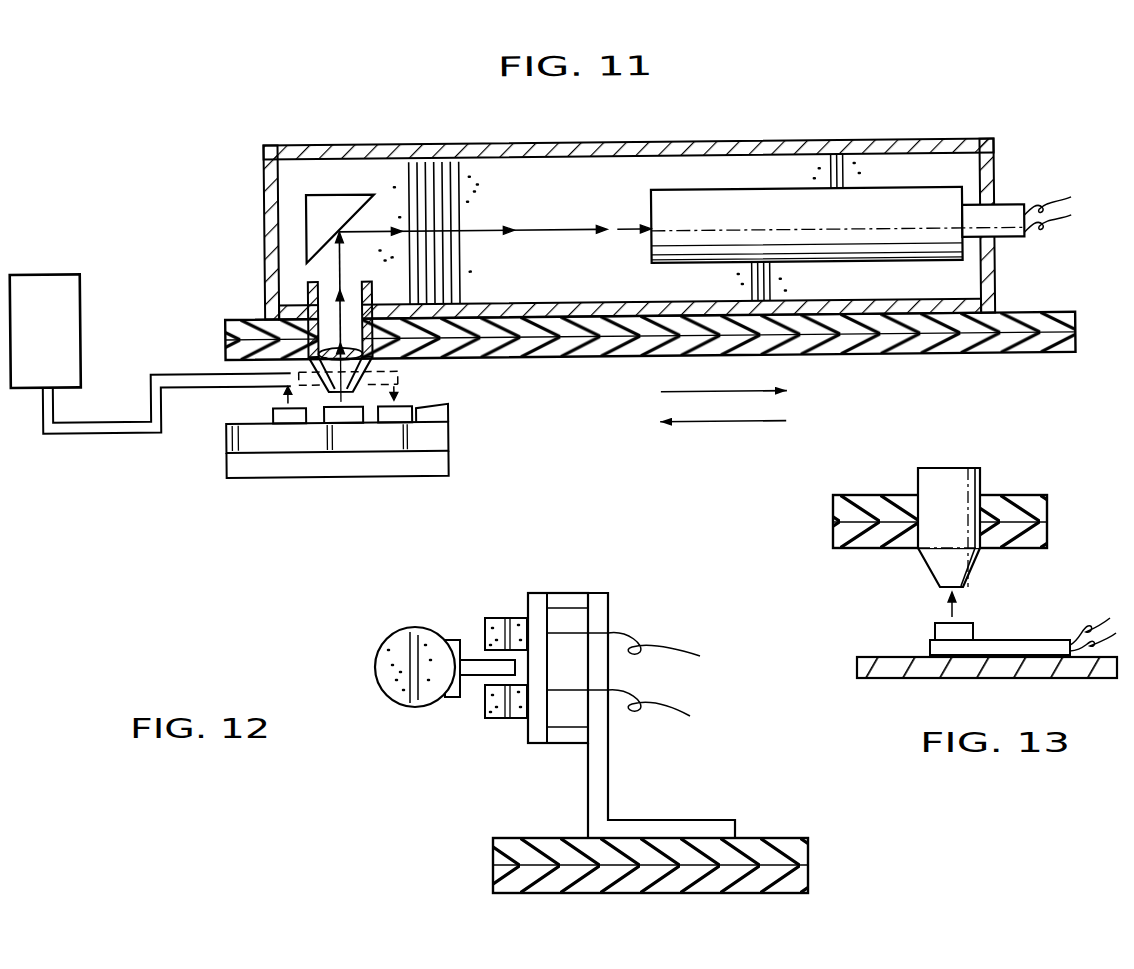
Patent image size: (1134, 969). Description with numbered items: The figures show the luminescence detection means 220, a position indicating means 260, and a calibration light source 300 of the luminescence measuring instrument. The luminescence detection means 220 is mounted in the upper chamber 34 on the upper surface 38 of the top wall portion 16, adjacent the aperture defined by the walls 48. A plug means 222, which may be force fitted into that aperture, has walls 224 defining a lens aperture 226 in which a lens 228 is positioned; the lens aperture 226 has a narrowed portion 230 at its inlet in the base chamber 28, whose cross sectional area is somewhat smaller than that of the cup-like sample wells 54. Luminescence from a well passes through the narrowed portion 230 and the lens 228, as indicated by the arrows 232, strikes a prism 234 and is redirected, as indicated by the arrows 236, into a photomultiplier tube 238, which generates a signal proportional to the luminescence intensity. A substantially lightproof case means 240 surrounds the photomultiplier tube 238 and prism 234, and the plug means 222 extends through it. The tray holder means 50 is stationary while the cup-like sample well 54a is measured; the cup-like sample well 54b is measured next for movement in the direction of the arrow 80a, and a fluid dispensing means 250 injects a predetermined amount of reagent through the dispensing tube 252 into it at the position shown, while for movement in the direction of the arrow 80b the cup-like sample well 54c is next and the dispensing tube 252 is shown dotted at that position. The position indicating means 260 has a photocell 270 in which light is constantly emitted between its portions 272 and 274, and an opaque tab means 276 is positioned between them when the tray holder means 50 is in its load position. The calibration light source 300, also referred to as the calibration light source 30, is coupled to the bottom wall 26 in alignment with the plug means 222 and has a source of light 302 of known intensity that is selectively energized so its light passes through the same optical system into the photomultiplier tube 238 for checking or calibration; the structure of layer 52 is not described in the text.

In FIG. 11, the top wall portion 16 is at (674, 343).
In FIG. 12, the top wall portion 16 is at (681, 840).
In FIG. 13, the top wall portion 16 is at (967, 524).
In FIG. 13, the bottom wall 26 is at (1078, 672).
In FIG. 11, the base chamber 28 is at (898, 380).
In FIG. 12, the base chamber 28 is at (762, 768).
In FIG. 13, the base chamber 28 is at (817, 575).
In FIG. 11, the calibration light source 30 is at (566, 362).
In FIG. 12, the calibration light source 30 is at (775, 838).
In FIG. 13, the calibration light source 30 is at (1025, 548).
In FIG. 11, the upper chamber 34 is at (1040, 131).
In FIG. 11, the upper surface 38 is at (1022, 316).
In FIG. 11, the walls 48 is at (373, 357).
In FIG. 11, the tray holder means 50 is at (448, 459).
In FIG. 11, the circuit layer 52 is at (448, 433).
In FIG. 11, the cup-like sample wells 54 is at (386, 448).
In FIG. 11, the cup-like sample well 54a is at (340, 420).
In FIG. 11, the cup-like sample well 54b is at (290, 420).
In FIG. 11, the cup-like sample well 54c is at (392, 420).
In FIG. 11, the arrow 80a is at (714, 392).
In FIG. 11, the arrow 80b is at (722, 422).
In FIG. 11, the luminescence detection means 220 is at (629, 183).
In FIG. 11, the plug means 222 is at (365, 289).
In FIG. 13, the plug means 222 is at (918, 478).
In FIG. 11, the walls 224 is at (345, 303).
In FIG. 11, the lens aperture 226 is at (410, 262).
In FIG. 11, the lens 228 is at (362, 322).
In FIG. 11, the narrowed portion 230 is at (296, 405).
In FIG. 11, the arrows 232 is at (360, 282).
In FIG. 11, the prism 234 is at (337, 205).
In FIG. 11, the arrows 236 is at (571, 227).
In FIG. 11, the photomultiplier tube 238 is at (827, 200).
In FIG. 11, the lightproof case means 240 is at (539, 143).
In FIG. 13, the lightproof case means 240 is at (967, 504).
In FIG. 11, the fluid dispensing means 250 is at (135, 317).
In FIG. 11, the dispensing tube 252 is at (108, 429).
In FIG. 12, the position indicating means 260 is at (555, 686).
In FIG. 12, the photocell 270 is at (515, 606).
In FIG. 12, the portion 272 is at (503, 720).
In FIG. 12, the portion 274 is at (498, 618).
In FIG. 12, the opaque tab means 276 is at (475, 678).
In FIG. 13, the calibration light source 300 is at (963, 620).
In FIG. 13, the source of light 302 is at (975, 630).